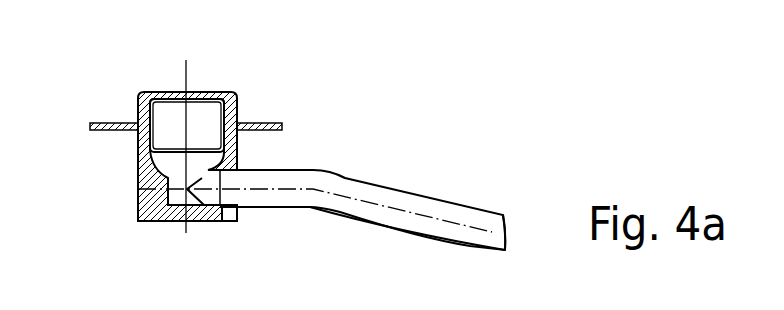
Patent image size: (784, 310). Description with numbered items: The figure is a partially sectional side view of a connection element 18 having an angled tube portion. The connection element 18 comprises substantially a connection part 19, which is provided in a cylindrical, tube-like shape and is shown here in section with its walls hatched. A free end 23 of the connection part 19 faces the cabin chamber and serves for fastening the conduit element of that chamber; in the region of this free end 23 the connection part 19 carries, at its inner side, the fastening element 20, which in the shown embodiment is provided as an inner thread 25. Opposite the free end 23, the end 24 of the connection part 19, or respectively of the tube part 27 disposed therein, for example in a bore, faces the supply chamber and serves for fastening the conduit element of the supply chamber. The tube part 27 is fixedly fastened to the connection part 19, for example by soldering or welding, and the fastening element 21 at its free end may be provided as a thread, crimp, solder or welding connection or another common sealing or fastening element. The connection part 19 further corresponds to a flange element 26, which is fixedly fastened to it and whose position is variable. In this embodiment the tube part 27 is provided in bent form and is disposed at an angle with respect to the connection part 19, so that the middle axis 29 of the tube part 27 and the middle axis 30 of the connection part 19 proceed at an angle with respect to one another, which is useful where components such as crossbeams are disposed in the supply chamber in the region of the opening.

The connection element 18 is at (270, 235).
The connection part 19 is at (142, 205).
The fastening element 20 is at (219, 117).
The fastening element 21 is at (498, 200).
The free end 23 is at (145, 80).
The end 24 is at (178, 235).
The inner thread 25 is at (160, 113).
The flange element 26 is at (97, 132).
The tube part 27 is at (432, 230).
The middle axis 29 is at (288, 187).
The middle axis 30 is at (138, 170).